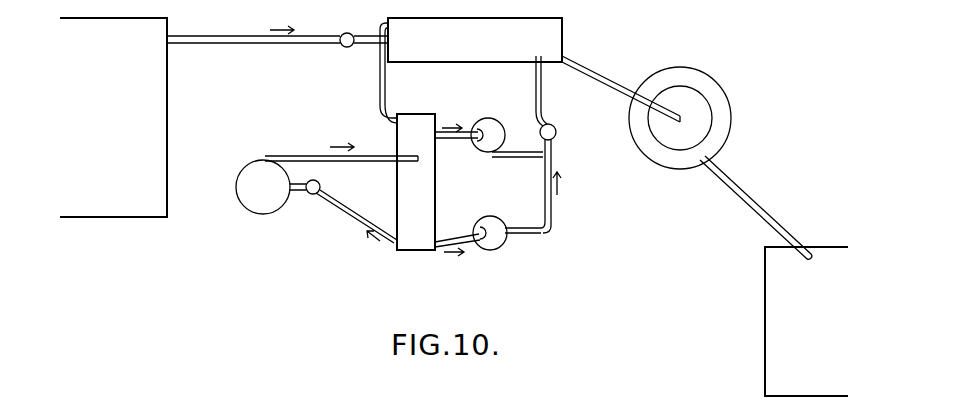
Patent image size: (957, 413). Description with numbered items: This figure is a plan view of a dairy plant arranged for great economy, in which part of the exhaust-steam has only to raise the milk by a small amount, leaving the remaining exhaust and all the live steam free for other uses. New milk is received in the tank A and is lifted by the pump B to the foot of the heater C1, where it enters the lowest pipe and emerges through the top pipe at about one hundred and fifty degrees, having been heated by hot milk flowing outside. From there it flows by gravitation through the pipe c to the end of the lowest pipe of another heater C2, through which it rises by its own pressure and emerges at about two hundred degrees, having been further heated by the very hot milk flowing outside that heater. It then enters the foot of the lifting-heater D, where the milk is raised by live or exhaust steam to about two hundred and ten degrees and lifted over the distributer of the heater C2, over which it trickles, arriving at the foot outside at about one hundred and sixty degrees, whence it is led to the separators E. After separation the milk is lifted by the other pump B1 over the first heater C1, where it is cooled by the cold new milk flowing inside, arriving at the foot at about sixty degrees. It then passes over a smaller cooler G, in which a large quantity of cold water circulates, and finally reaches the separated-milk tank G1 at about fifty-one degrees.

The tank A is at (113, 117).
The pump B is at (347, 28).
The heater C1 is at (475, 40).
The pipe c is at (375, 78).
The heater C2 is at (416, 182).
The lifting-heater D is at (263, 187).
The separators E is at (485, 128).
The pump B1 is at (557, 127).
The cooler G is at (680, 118).
The separated-milk tank G1 is at (806, 321).